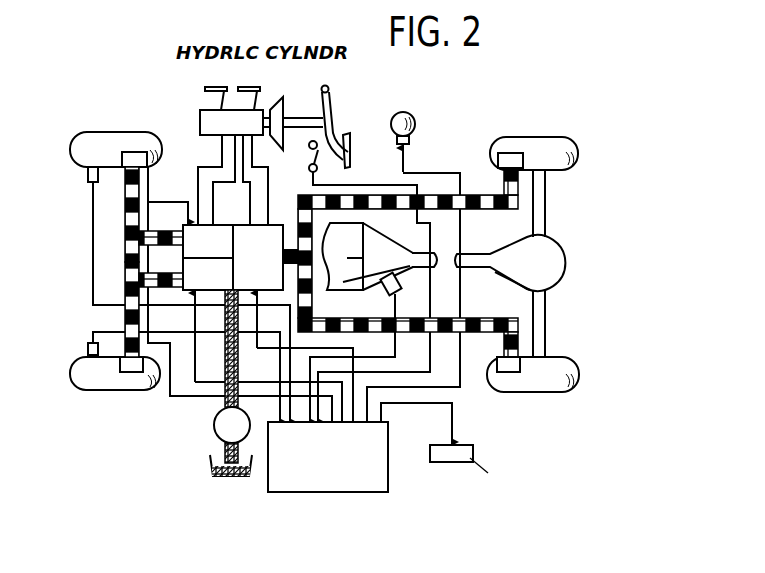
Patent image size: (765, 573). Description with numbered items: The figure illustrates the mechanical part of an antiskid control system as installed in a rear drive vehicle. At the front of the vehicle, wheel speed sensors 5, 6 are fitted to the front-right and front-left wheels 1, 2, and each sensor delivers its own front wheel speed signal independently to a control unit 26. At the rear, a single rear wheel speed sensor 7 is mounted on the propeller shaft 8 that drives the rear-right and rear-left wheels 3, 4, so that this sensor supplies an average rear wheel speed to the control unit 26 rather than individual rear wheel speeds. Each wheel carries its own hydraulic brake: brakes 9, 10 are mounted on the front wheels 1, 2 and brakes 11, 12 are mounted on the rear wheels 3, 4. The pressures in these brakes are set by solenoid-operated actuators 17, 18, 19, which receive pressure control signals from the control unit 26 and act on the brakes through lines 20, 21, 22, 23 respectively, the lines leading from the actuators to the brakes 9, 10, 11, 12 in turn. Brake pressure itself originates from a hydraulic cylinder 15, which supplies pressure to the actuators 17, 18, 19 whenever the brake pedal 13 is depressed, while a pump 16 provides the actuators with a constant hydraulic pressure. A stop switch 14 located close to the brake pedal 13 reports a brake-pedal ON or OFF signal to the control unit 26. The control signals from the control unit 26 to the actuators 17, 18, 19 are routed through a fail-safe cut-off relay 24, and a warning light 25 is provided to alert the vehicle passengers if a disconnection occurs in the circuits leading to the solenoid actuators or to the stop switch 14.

The front-right wheel 1 is at (112, 133).
The front-left wheel 2 is at (106, 391).
The rear-right wheel 3 is at (550, 137).
The rear-left wheel 4 is at (542, 391).
The wheel speed sensor 5 is at (88, 177).
The wheel speed sensor 6 is at (88, 348).
The rear wheel speed sensor 7 is at (398, 276).
The propeller shaft 8 is at (412, 252).
The hydraulic brake 9 is at (135, 153).
The hydraulic brake 10 is at (140, 373).
The hydraulic brake 11 is at (512, 153).
The hydraulic brake 12 is at (507, 373).
The brake pedal 13 is at (335, 127).
The stop switch 14 is at (316, 153).
The hydraulic cylinder 15 is at (200, 120).
The pump 16 is at (213, 430).
The solenoid-operated actuator 17 is at (208, 241).
The solenoid-operated actuator 18 is at (262, 340).
The solenoid-operated actuator 19 is at (293, 323).
The line 20 is at (139, 204).
The line 21 is at (125, 295).
The line 22 is at (473, 196).
The line 23 is at (474, 331).
The fail-safe cut-off relay 24 is at (448, 463).
The warning light 25 is at (410, 107).
The control unit 26 is at (288, 493).